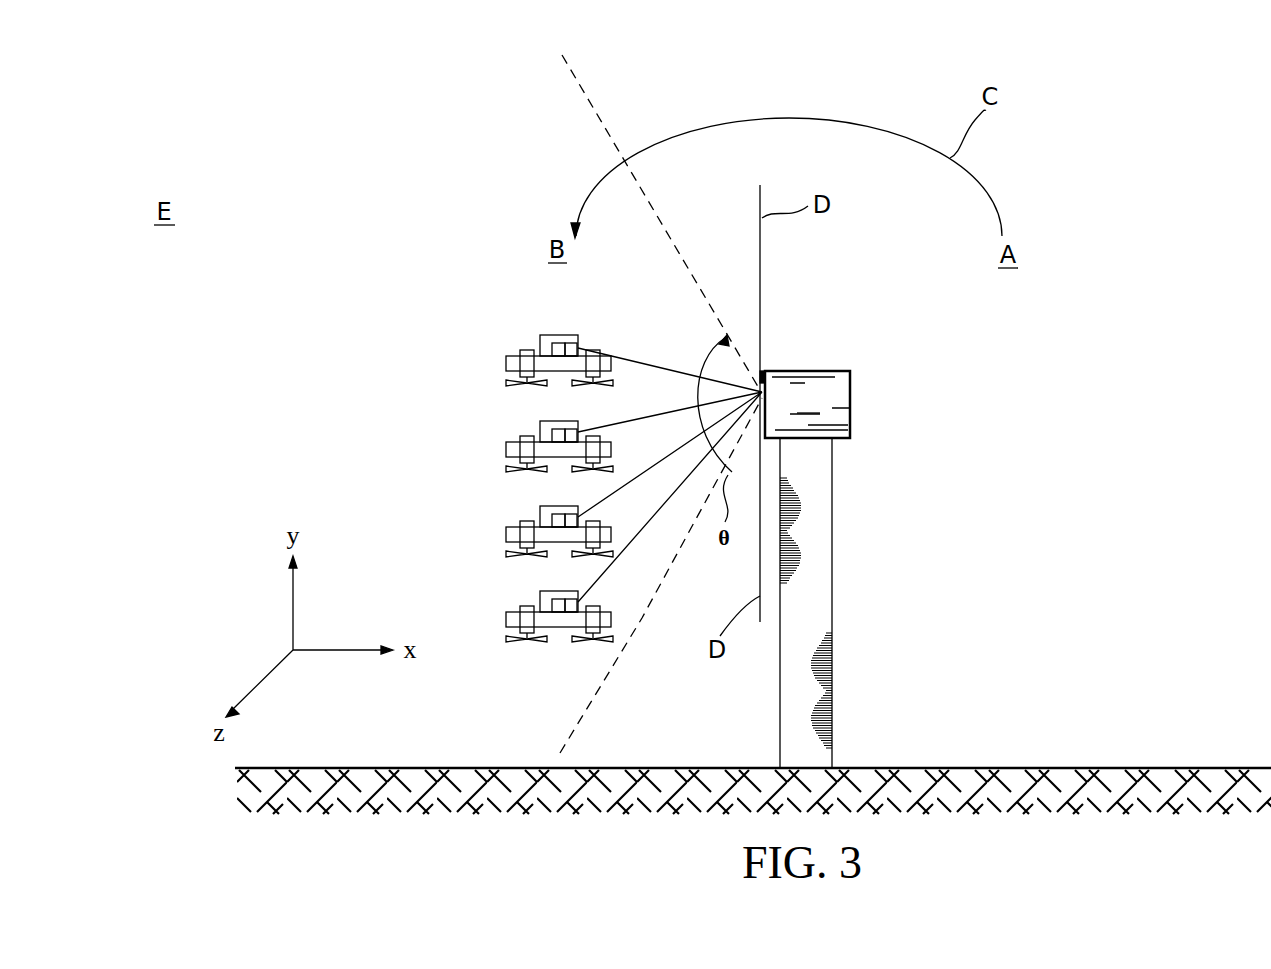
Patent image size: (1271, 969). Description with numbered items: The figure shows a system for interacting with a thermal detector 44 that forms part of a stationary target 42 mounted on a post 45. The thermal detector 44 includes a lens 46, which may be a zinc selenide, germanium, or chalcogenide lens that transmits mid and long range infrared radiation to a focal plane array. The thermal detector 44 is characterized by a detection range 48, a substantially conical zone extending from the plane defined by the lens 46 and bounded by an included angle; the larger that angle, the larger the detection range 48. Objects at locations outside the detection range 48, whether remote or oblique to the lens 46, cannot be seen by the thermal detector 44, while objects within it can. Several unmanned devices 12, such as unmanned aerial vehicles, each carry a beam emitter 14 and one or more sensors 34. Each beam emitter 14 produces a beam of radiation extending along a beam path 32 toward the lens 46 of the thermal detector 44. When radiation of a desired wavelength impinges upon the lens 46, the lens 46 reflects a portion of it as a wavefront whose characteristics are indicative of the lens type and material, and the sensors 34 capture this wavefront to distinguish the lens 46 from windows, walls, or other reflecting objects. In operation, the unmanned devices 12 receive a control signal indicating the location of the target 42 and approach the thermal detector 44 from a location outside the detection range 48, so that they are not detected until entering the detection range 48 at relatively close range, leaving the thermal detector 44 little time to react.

The unmanned device 12 is at (506, 363).
The beam emitter 14 is at (541, 335).
The beam path 32 is at (677, 369).
The sensor 34 is at (570, 336).
The target 42 is at (896, 371).
The thermal detector 44 is at (807, 404).
The post 45 is at (834, 557).
The lens 46 is at (764, 371).
The detection range 48 is at (655, 207).